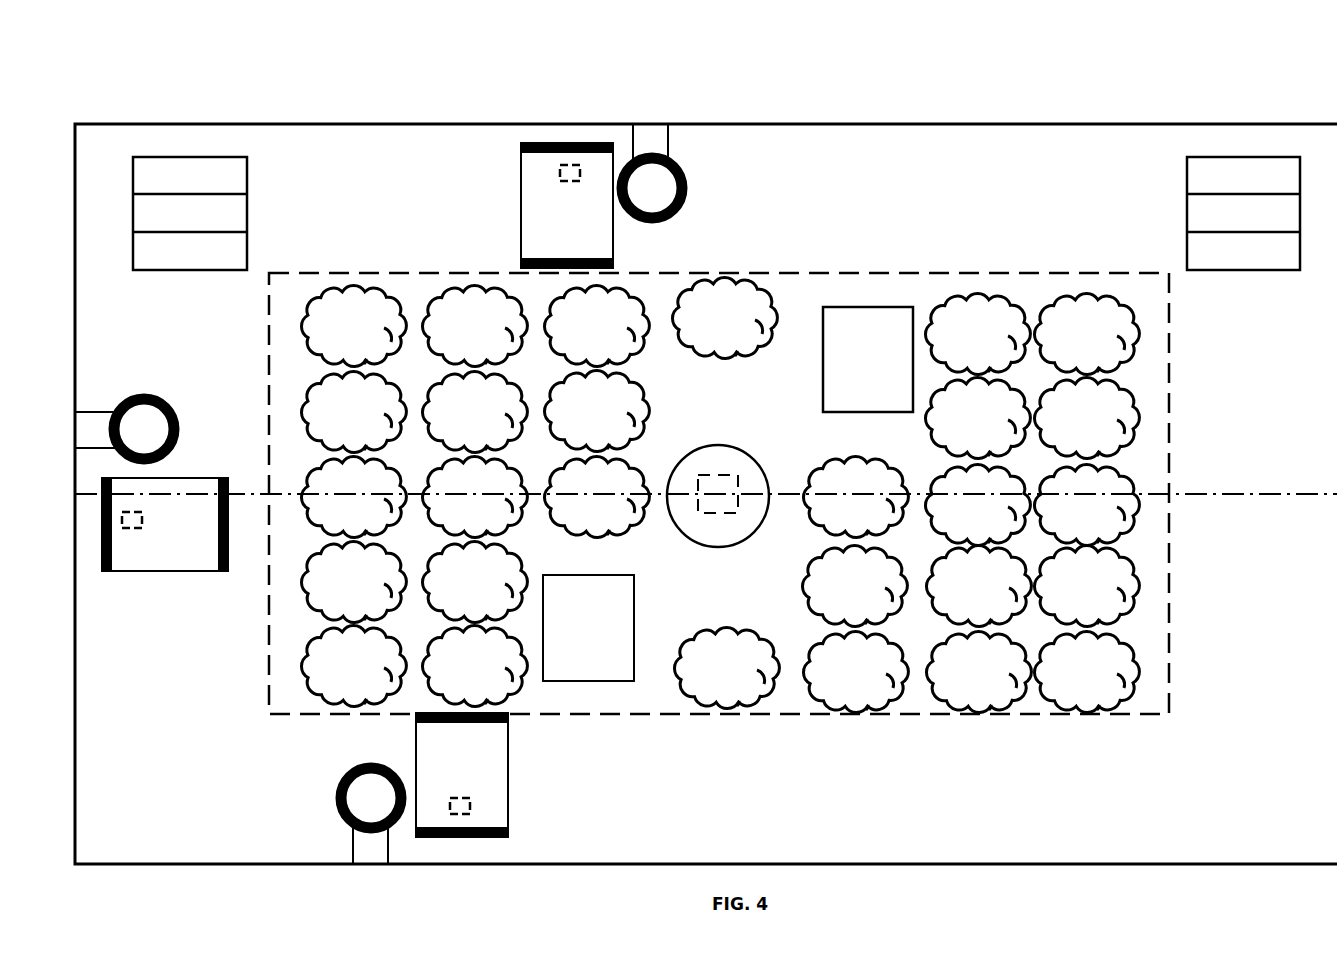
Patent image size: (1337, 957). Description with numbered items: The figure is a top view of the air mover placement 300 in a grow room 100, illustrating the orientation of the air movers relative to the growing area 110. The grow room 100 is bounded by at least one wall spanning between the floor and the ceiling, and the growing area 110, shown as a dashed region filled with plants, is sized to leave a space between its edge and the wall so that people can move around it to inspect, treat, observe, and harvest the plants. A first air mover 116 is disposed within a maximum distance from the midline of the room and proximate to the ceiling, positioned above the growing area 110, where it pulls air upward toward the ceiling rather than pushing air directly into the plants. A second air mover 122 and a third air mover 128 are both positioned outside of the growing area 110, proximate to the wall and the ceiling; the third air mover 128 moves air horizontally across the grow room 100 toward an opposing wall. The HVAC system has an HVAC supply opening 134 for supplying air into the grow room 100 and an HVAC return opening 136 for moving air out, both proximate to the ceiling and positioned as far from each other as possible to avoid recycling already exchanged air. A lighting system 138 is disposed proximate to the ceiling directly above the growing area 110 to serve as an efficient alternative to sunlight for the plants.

The robotic system / facility map 300 is at (270, 84).
The grow room 100 is at (905, 124).
The growing area 110 is at (422, 285).
The first air mover 116 is at (703, 446).
The second air mover 122 is at (137, 398).
The third air mover 128 is at (508, 767).
The HVAC supply opening 134 is at (1228, 157).
The HVAC return opening 136 is at (205, 157).
The lighting system 138 is at (888, 307).